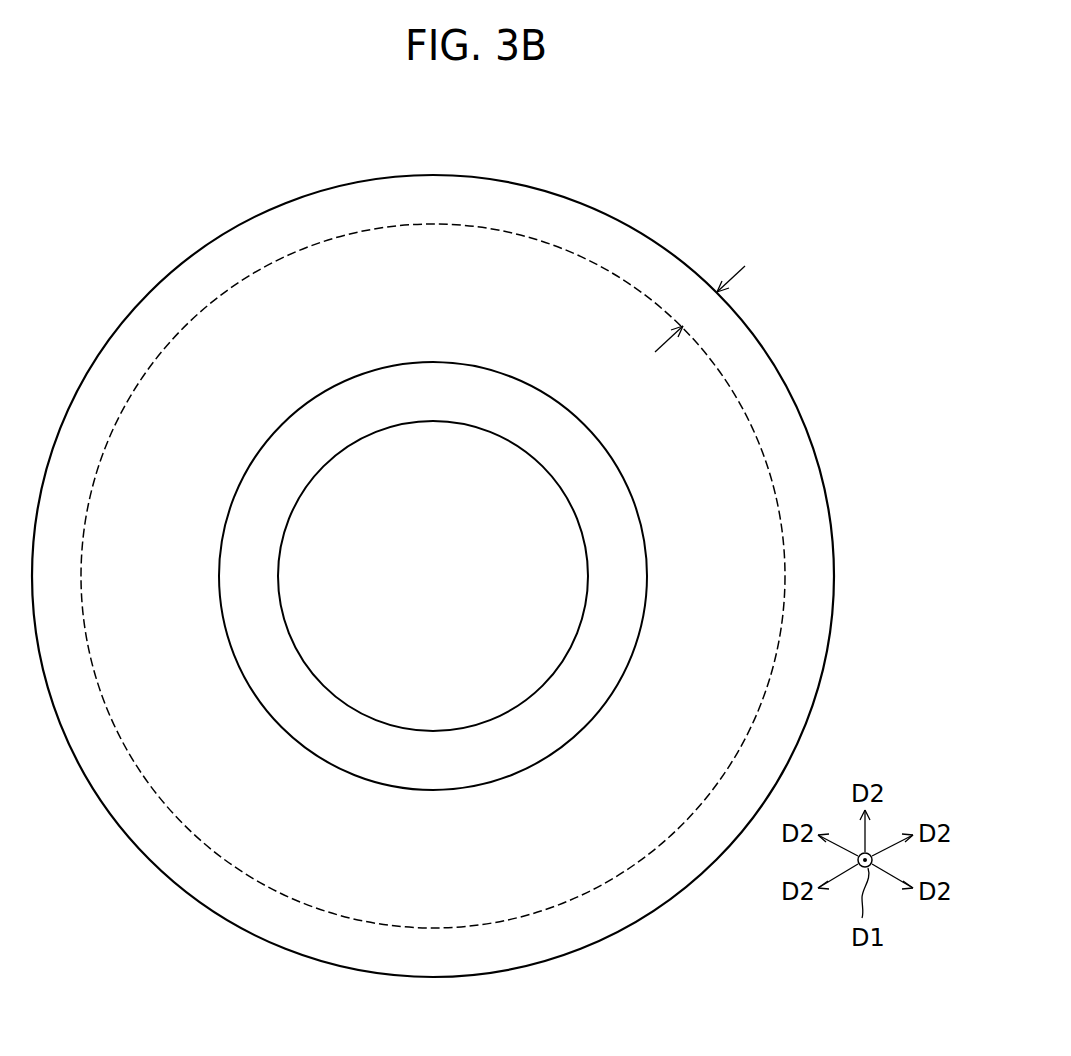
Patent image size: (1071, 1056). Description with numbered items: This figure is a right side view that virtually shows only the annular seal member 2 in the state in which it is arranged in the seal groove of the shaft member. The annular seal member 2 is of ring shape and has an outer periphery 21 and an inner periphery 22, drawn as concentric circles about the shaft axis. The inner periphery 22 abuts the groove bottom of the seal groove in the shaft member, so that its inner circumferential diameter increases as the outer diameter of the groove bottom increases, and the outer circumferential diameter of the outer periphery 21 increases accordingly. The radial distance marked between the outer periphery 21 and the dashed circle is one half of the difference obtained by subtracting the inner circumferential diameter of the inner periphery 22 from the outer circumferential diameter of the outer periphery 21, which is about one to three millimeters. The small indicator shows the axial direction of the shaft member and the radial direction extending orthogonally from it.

The annular seal member 2 is at (142, 196).
The outer periphery 21 is at (634, 246).
The inner periphery 22 is at (518, 716).